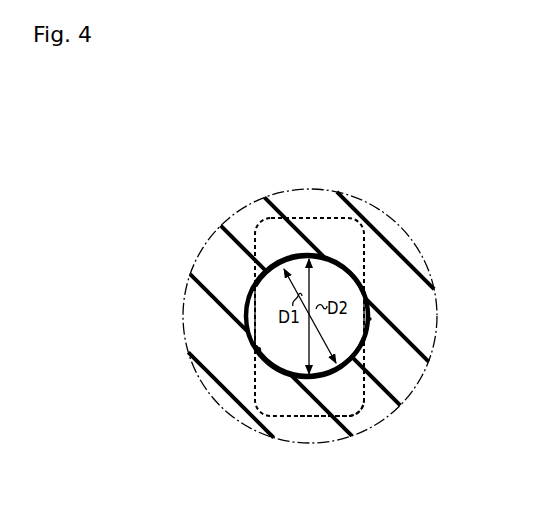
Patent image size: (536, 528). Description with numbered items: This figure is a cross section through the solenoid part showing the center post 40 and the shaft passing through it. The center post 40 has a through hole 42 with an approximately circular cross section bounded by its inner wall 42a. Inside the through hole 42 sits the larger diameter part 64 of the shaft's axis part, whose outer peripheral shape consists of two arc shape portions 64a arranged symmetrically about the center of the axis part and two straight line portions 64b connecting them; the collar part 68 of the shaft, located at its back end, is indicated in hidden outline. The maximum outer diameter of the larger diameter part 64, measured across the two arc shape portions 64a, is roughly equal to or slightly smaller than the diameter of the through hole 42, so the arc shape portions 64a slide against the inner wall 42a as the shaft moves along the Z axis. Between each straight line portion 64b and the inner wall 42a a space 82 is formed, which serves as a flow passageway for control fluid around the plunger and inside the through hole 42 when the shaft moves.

The center post 40 is at (405, 295).
The through hole 42 is at (367, 291).
The inner wall 42a is at (258, 358).
The larger diameter part 64 is at (344, 288).
The arc shape portion 64a is at (300, 231).
The straight line portion 64b is at (249, 317).
The collar part 68 is at (345, 412).
The space 82 is at (257, 349).